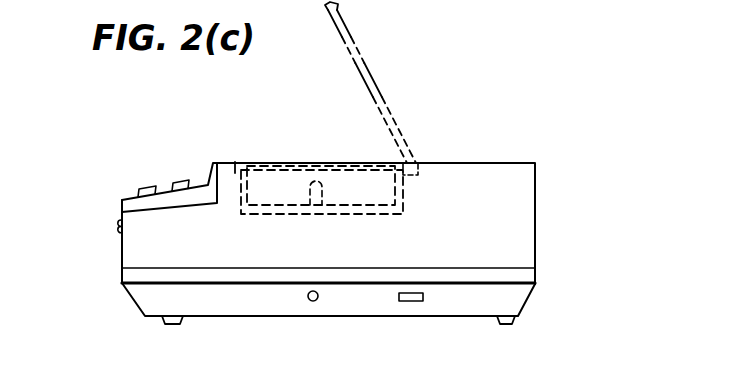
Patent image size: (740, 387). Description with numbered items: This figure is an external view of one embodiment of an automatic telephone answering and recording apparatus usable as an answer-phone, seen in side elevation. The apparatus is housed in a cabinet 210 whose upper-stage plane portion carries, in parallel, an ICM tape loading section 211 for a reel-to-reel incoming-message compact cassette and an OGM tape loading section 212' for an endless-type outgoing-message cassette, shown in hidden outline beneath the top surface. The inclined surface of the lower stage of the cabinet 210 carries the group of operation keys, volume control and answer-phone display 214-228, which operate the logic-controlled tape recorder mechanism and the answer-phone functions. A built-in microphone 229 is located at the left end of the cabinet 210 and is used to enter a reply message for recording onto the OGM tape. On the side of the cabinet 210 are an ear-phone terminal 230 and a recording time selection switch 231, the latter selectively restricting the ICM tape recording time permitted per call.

The cabinet 210 is at (535, 237).
The ICM tape loading section 211 is at (321, 149).
The OGM tape loading section 212' is at (329, 108).
The operation keys, volume control and answer-phone display 214-228 is at (167, 171).
The built-in microphone 229 is at (117, 232).
The ear-phone terminal 230 is at (313, 301).
The recording time selection switch 231 is at (412, 301).